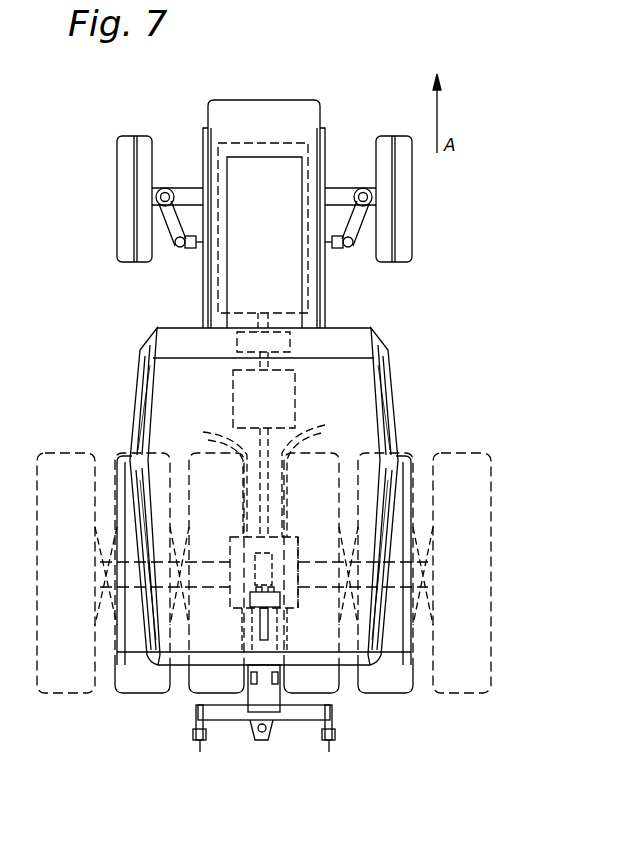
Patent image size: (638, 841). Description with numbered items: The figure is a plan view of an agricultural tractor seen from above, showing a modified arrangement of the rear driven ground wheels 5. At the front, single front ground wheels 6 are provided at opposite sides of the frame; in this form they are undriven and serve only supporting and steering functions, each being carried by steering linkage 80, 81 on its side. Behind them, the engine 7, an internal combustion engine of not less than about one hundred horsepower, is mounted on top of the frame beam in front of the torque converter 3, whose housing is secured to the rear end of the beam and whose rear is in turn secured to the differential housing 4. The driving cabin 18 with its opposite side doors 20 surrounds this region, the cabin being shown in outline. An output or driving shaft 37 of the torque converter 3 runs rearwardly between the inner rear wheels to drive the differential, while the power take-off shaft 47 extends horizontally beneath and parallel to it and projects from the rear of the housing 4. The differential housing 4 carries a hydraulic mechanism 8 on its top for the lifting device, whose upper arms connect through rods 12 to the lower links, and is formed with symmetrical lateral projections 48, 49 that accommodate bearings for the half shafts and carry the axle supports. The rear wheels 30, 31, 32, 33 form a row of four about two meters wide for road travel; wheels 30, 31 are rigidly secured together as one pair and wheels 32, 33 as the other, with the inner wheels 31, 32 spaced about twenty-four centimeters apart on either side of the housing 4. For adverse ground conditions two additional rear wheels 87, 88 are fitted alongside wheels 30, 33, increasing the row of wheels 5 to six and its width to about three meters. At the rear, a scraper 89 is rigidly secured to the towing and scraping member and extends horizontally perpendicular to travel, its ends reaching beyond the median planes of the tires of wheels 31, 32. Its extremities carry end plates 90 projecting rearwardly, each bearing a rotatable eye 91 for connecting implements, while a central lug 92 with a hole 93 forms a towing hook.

The torque converter 3 is at (233, 402).
The differential housing 4 is at (203, 435).
The rear driven ground wheels 5 is at (406, 458).
The front ground wheels 6 is at (135, 136).
The engine 7 is at (284, 144).
The hydraulic mechanism 8 is at (281, 598).
The rods 12 is at (265, 680).
The driving cabin 18 is at (186, 326).
The side doors 20 is at (147, 377).
The rear wheel 30 is at (125, 694).
The rear wheel 31 is at (200, 694).
The rear wheel 32 is at (330, 694).
The rear wheel 33 is at (395, 693).
The output or driving shaft 37 is at (267, 498).
The power take-off shaft 47 is at (262, 630).
The lateral projection 48 is at (230, 540).
The lateral projection 49 is at (296, 538).
The steering cylinder 80 is at (350, 248).
The steering cylinder 81 is at (178, 248).
The additional rear wheel 87 is at (65, 695).
The additional rear wheel 88 is at (469, 693).
The scraper 89 is at (222, 721).
The end plates 90 is at (200, 748).
The rotatable eyes 91 is at (195, 740).
The lug 92 is at (256, 741).
The hole 93 is at (268, 733).